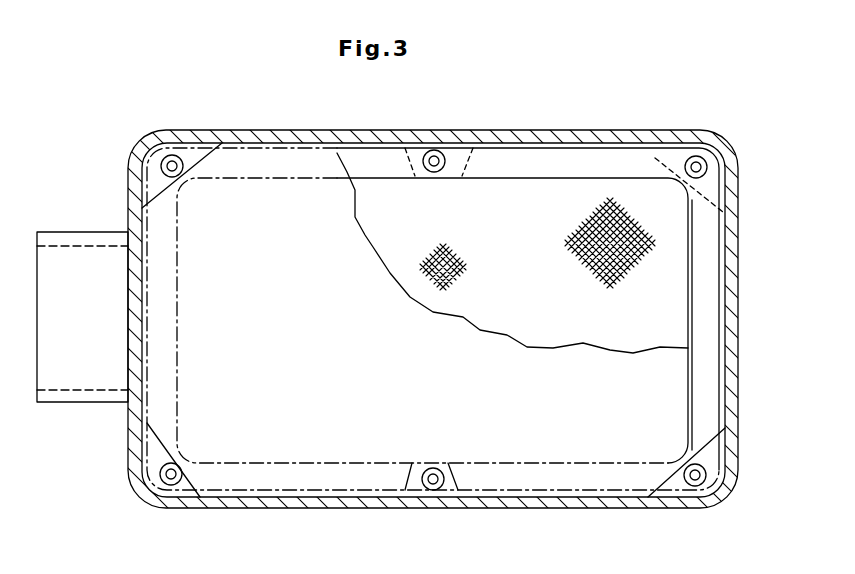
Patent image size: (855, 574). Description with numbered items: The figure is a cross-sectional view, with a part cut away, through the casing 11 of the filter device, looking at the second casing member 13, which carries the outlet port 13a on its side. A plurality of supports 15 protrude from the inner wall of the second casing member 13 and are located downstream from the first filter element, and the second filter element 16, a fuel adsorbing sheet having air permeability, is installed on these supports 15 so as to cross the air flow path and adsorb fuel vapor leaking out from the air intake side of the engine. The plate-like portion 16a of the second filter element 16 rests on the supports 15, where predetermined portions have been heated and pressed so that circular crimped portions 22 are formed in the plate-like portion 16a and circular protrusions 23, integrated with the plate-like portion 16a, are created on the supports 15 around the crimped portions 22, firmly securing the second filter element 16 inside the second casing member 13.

The casing 11 is at (293, 128).
The second casing member 13 is at (387, 135).
The outlet port 13a is at (87, 247).
The supports 15 is at (190, 150).
The second filter element 16 is at (515, 325).
The plate-like portion 16a is at (712, 315).
The crimped portions 22 is at (706, 160).
The protrusions 23 is at (158, 172).